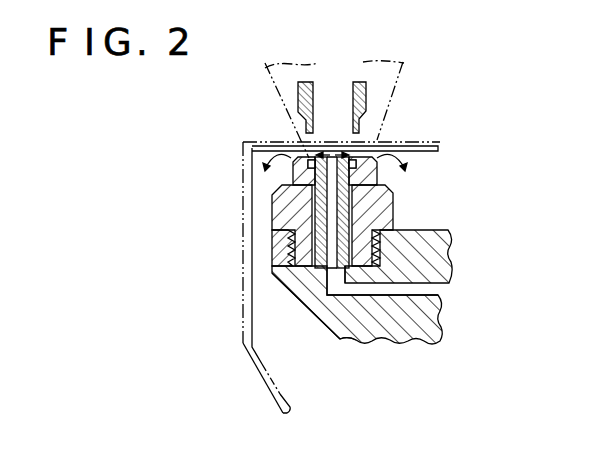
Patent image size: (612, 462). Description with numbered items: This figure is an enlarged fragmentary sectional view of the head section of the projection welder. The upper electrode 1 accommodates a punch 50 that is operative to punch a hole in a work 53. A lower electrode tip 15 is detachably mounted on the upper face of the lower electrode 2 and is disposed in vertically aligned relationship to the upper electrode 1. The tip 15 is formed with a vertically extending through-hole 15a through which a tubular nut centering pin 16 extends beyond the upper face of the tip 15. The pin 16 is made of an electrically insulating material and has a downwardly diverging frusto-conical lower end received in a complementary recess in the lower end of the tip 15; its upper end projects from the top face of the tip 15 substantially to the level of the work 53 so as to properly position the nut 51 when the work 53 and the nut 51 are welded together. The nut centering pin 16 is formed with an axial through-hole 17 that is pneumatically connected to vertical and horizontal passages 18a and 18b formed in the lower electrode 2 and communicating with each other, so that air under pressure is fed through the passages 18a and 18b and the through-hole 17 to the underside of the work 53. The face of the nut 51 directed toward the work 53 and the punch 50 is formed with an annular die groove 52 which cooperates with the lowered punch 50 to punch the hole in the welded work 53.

The upper electrode 1 is at (399, 88).
The lower electrode 2 is at (366, 330).
The lower electrode tip 15 is at (278, 200).
The through-hole 15a is at (347, 208).
The nut centering pin 16 is at (290, 250).
The axial through-hole 17 is at (334, 280).
The vertical passage 18a is at (320, 272).
The horizontal passage 18b is at (420, 293).
The punch 50 is at (310, 160).
The nut 51 is at (376, 166).
The annular die groove 52 is at (319, 150).
The work 53 is at (248, 160).